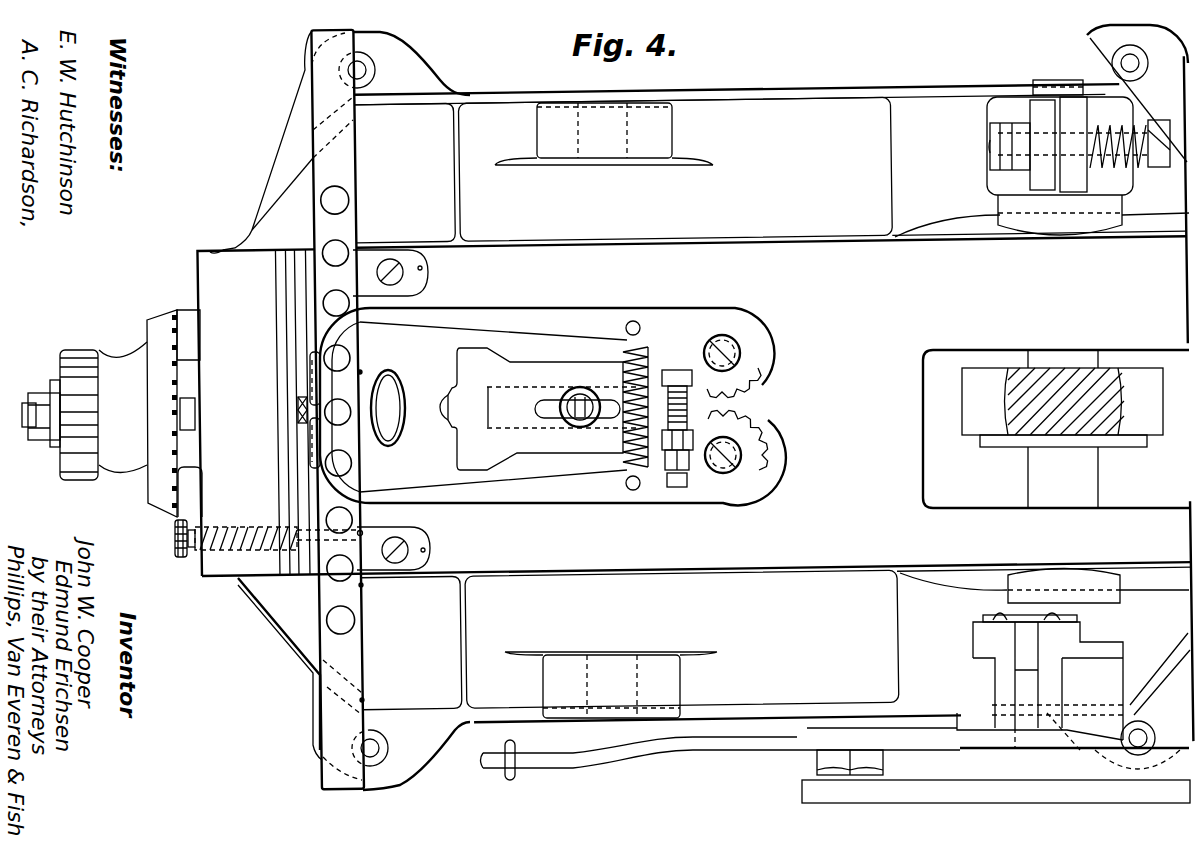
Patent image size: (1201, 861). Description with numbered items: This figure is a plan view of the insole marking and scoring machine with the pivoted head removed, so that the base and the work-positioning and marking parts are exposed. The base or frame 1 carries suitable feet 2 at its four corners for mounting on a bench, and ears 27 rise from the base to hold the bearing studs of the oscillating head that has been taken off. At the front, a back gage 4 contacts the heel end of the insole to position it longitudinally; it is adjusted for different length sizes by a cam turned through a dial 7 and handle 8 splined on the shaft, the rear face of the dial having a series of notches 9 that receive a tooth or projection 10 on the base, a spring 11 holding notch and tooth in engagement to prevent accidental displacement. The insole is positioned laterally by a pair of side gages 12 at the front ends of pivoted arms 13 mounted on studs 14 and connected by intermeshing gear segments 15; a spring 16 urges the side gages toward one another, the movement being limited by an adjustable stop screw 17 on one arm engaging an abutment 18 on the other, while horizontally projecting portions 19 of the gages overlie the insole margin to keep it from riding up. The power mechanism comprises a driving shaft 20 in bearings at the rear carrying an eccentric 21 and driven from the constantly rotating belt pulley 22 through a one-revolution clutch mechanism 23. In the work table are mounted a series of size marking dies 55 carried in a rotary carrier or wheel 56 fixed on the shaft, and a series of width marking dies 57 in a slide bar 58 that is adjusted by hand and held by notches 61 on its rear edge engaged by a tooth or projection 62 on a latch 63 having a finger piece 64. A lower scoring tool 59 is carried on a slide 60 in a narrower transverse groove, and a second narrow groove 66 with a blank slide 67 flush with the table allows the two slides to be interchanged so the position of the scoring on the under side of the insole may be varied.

The base or frame 1 is at (897, 72).
The feet 2 is at (393, 43).
The back gage 4 is at (500, 450).
The dial 7 is at (140, 403).
The handle 8 is at (90, 352).
The notches 9 is at (180, 395).
The tooth or projection 10 is at (175, 418).
The spring 11 is at (55, 398).
The side gages 12 is at (310, 360).
The pivoted arms 13 is at (563, 313).
The studs 14 is at (735, 345).
The intermeshing gear segments 15 is at (762, 398).
The spring 16 is at (652, 360).
The adjustable stop screw 17 is at (677, 488).
The abutment 18 is at (685, 370).
The horizontally projecting portions 19 is at (310, 373).
The driving shaft 20 is at (1052, 80).
The eccentric 21 is at (1015, 442).
The belt pulley 22 is at (803, 797).
The one-revolution clutch mechanism 23 is at (995, 687).
The ears 27 is at (657, 100).
The size marking dies 55 is at (397, 407).
The rotary carrier or wheel 56 is at (398, 437).
The width marking dies 57 is at (353, 202).
The slide bar 58 is at (320, 118).
The lower scoring tool 59 is at (298, 412).
The slide 60 is at (300, 330).
The notches 61 is at (360, 375).
The tooth or projection 62 is at (360, 533).
The latch 63 is at (305, 580).
The finger piece 64 is at (180, 562).
The second narrow groove 66 is at (280, 578).
The blank slide 67 is at (283, 250).